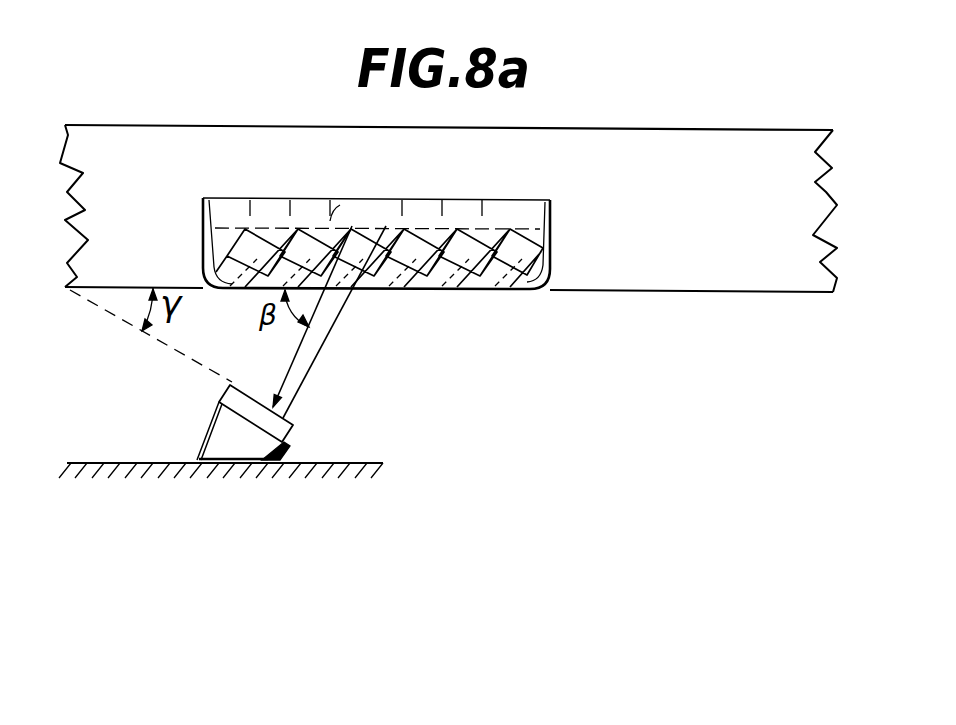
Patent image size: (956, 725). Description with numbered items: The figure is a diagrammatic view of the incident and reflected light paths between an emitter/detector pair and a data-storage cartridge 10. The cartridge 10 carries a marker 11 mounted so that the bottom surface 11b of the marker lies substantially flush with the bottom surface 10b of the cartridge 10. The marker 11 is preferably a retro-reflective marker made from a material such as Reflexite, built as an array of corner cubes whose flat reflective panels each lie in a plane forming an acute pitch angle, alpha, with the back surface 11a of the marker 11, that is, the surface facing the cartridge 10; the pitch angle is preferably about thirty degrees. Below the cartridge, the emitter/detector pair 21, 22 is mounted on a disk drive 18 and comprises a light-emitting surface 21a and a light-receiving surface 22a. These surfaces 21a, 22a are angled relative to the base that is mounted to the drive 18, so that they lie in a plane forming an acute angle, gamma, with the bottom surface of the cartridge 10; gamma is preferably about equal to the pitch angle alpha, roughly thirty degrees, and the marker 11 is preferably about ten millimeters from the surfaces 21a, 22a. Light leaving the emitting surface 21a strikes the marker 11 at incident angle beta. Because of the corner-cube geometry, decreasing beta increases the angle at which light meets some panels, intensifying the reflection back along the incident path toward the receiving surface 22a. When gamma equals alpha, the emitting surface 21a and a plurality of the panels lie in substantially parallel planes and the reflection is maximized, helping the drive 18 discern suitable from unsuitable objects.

The data-storage cartridge 10 is at (792, 203).
The bottom surface of cartridge 10b is at (702, 293).
The marker 11 is at (440, 302).
The back surface of marker 11a is at (512, 202).
The bottom surface of marker 11b is at (509, 291).
The disk drive 18 is at (332, 490).
The emitter 21 is at (176, 411).
The detector 22 is at (202, 424).
The light-emitting surface 21a is at (365, 322).
The light-receiving surface 22a is at (288, 416).